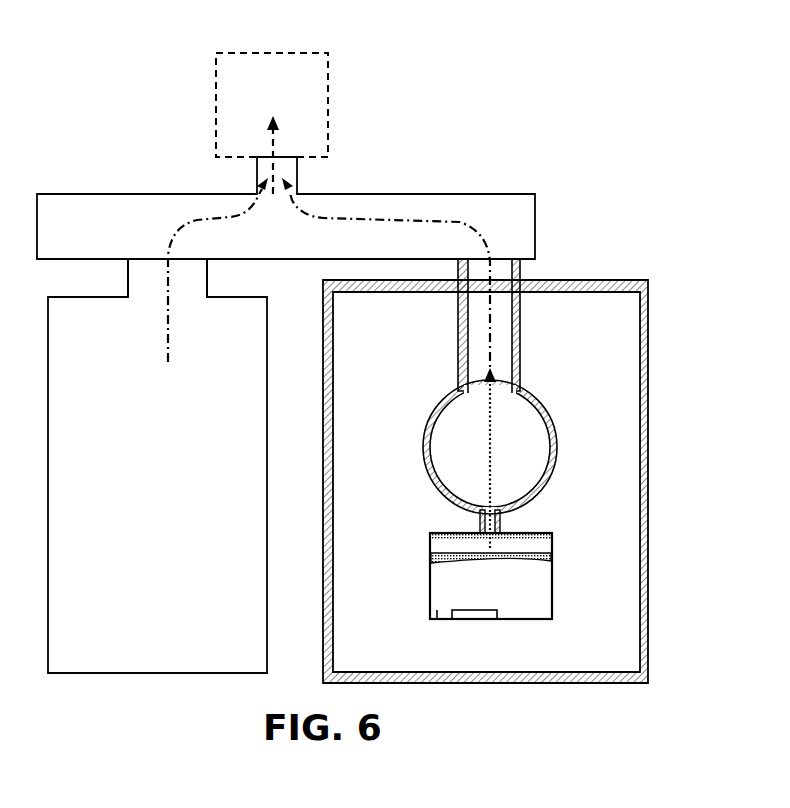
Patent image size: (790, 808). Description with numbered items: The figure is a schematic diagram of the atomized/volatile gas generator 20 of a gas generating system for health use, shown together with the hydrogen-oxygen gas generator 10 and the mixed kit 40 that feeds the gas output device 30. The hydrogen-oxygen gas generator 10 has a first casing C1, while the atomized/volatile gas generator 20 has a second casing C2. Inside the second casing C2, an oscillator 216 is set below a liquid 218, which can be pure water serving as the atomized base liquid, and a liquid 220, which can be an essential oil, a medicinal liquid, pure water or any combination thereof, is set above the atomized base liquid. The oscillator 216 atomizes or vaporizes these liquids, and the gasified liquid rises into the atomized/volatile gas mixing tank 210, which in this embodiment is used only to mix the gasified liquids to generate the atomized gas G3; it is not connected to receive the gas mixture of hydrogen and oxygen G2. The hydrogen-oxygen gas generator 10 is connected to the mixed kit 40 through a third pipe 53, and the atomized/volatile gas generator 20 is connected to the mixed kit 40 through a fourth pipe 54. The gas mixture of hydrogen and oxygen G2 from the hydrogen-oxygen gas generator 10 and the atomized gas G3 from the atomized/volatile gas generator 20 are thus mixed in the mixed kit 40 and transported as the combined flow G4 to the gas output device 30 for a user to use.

The gas output device 30 is at (302, 53).
The mixed kit 40 is at (380, 194).
The hydrogen-oxygen gas generator 10 is at (267, 480).
The first casing C1 is at (267, 390).
The third pipe 53 is at (128, 280).
The atomized/volatile gas generator 20 is at (648, 372).
The second casing C2 is at (578, 280).
The fourth pipe 54 is at (520, 259).
The atomized/volatile gas mixing tank 210 is at (530, 392).
The liquid 220 is at (544, 562).
The oscillator 216 is at (487, 612).
The liquid 218 is at (437, 612).
The gas mixture of hydrogen and oxygen G2 is at (210, 207).
The atomized gas G3 is at (460, 222).
The fourth gas flow G4 is at (274, 140).